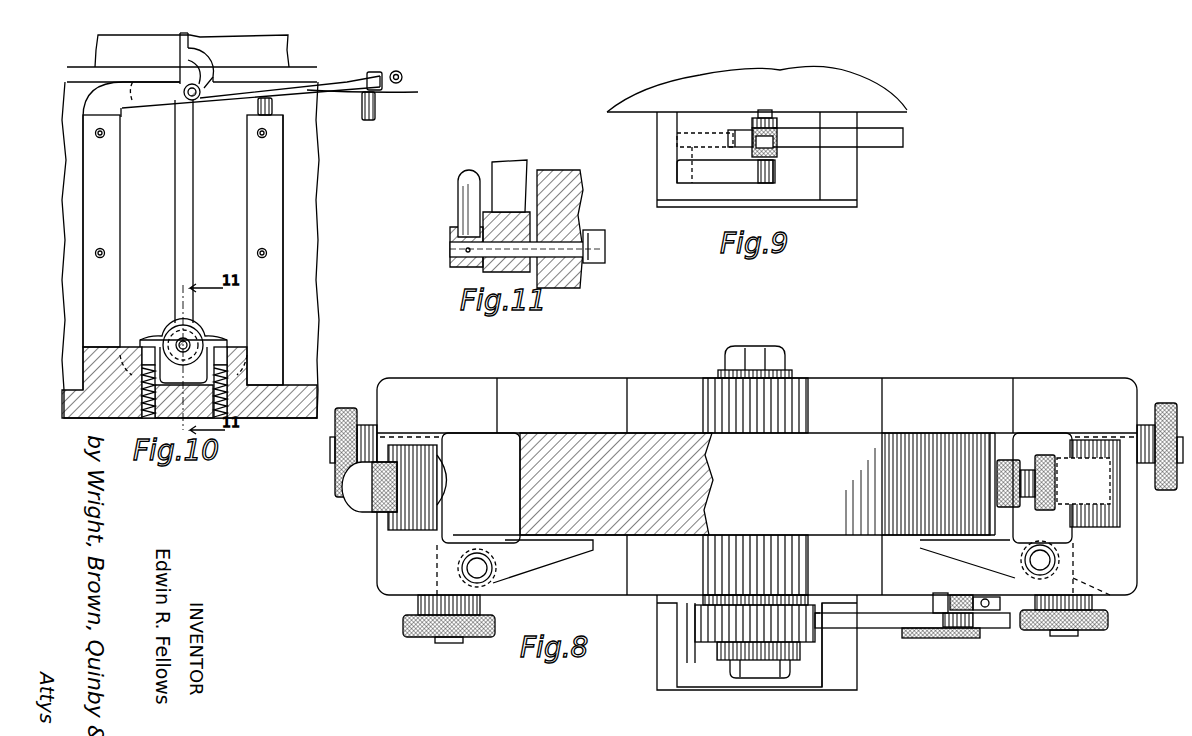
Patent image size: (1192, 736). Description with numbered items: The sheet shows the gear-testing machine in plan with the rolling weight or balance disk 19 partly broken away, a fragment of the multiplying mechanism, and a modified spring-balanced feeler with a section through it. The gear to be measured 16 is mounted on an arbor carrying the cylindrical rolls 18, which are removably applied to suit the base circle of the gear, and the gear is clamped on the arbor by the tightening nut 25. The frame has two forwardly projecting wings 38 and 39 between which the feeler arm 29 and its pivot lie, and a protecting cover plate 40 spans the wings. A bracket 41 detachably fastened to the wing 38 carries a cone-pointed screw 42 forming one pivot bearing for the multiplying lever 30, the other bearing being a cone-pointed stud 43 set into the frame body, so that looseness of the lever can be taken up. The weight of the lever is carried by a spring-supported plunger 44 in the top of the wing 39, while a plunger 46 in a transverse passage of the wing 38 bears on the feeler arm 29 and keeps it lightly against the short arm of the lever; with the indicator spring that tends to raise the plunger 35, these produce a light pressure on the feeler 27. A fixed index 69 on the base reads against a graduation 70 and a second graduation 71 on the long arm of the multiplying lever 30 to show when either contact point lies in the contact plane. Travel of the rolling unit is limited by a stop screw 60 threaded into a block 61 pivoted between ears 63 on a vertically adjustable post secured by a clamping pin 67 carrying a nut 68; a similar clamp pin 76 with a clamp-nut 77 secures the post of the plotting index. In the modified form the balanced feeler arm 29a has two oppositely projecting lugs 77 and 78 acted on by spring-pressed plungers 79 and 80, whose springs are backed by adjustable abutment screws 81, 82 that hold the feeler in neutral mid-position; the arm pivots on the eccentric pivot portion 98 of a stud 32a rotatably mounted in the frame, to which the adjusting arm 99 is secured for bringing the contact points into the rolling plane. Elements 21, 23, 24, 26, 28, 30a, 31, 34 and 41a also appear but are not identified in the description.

In FIG. 8, the gear to be measured 16 is at (818, 628).
In FIG. 8, the cylindrical rolls 18 is at (808, 405).
In FIG. 8, the weight or balance disk 19 is at (716, 466).
In FIG. 8, the bore 21 is at (703, 597).
In FIG. 8, the nut 23 is at (783, 352).
In FIG. 8, the washer 24 is at (793, 373).
In FIG. 8, the tightening nut 25 is at (753, 680).
In FIG. 8, the gear 26 is at (796, 645).
In FIG. 10, the feeler 27 is at (282, 58).
In FIG. 8, the feeler 27 is at (658, 390).
In FIG. 10, the housing 28 is at (305, 258).
In FIG. 9, the housing 28 is at (870, 93).
In FIG. 9, the feeler arm 29 is at (745, 135).
In FIG. 8, the feeler arm 29 is at (585, 580).
In FIG. 10, the balanced feeler arm 29a is at (184, 205).
In FIG. 11, the balanced feeler arm 29a is at (503, 170).
In FIG. 10, the multiplying lever 30 is at (240, 92).
In FIG. 9, the multiplying lever 30 is at (880, 140).
In FIG. 8, the multiplying lever 30 is at (882, 628).
In FIG. 10, the lever hub 30a is at (207, 80).
In FIG. 9, the lever hub 30a is at (778, 148).
In FIG. 8, the pin 31 is at (960, 632).
In FIG. 10, the stud 32a is at (192, 327).
In FIG. 11, the stud 32a is at (570, 245).
In FIG. 10, the hook 34 is at (192, 44).
In FIG. 10, the plunger 35 is at (376, 108).
In FIG. 10, the wing 38 is at (110, 185).
In FIG. 9, the wing 38 is at (657, 138).
In FIG. 8, the wing 38 is at (670, 685).
In FIG. 10, the wing 39 is at (270, 200).
In FIG. 9, the wing 39 is at (848, 185).
In FIG. 8, the wing 39 is at (845, 676).
In FIG. 8, the protecting cover plate 40 is at (805, 692).
In FIG. 9, the bracket 41 is at (712, 170).
In FIG. 8, the bracket 41 is at (706, 655).
In FIG. 10, the bent arm 41a is at (133, 100).
In FIG. 10, the cone-pointed screw 42 is at (196, 101).
In FIG. 9, the cone-pointed screw 42 is at (766, 165).
In FIG. 9, the cone-pointed stud 43 is at (772, 118).
In FIG. 10, the plunger 44 is at (283, 108).
In FIG. 8, the plunger 44 is at (950, 640).
In FIG. 9, the plunger 46 is at (732, 128).
In FIG. 8, the screw 60 is at (360, 505).
In FIG. 8, the block 61 is at (1045, 510).
In FIG. 8, the ears 63 is at (404, 530).
In FIG. 8, the clamping pin 67 is at (398, 438).
In FIG. 8, the nut 68 is at (346, 408).
In FIG. 10, the fixed index 69 is at (403, 77).
In FIG. 8, the fixed index 69 is at (985, 618).
In FIG. 10, the graduation 70 is at (378, 72).
In FIG. 10, the second graduation 71 is at (376, 94).
In FIG. 8, the clamp pin 76 is at (455, 577).
In FIG. 10, the clamp-nut 77 is at (153, 337).
In FIG. 8, the clamp-nut 77 is at (488, 638).
In FIG. 10, the lug 78 is at (216, 340).
In FIG. 10, the spring-pressed plunger 79 is at (140, 350).
In FIG. 10, the spring-pressed plunger 80 is at (232, 352).
In FIG. 10, the adjustable abutment screw 81 is at (142, 400).
In FIG. 10, the adjustable abutment screw 82 is at (222, 405).
In FIG. 10, the eccentric pivot portion 98 is at (180, 340).
In FIG. 11, the eccentric pivot portion 98 is at (500, 252).
In FIG. 11, the adjusting arm 99 is at (460, 183).